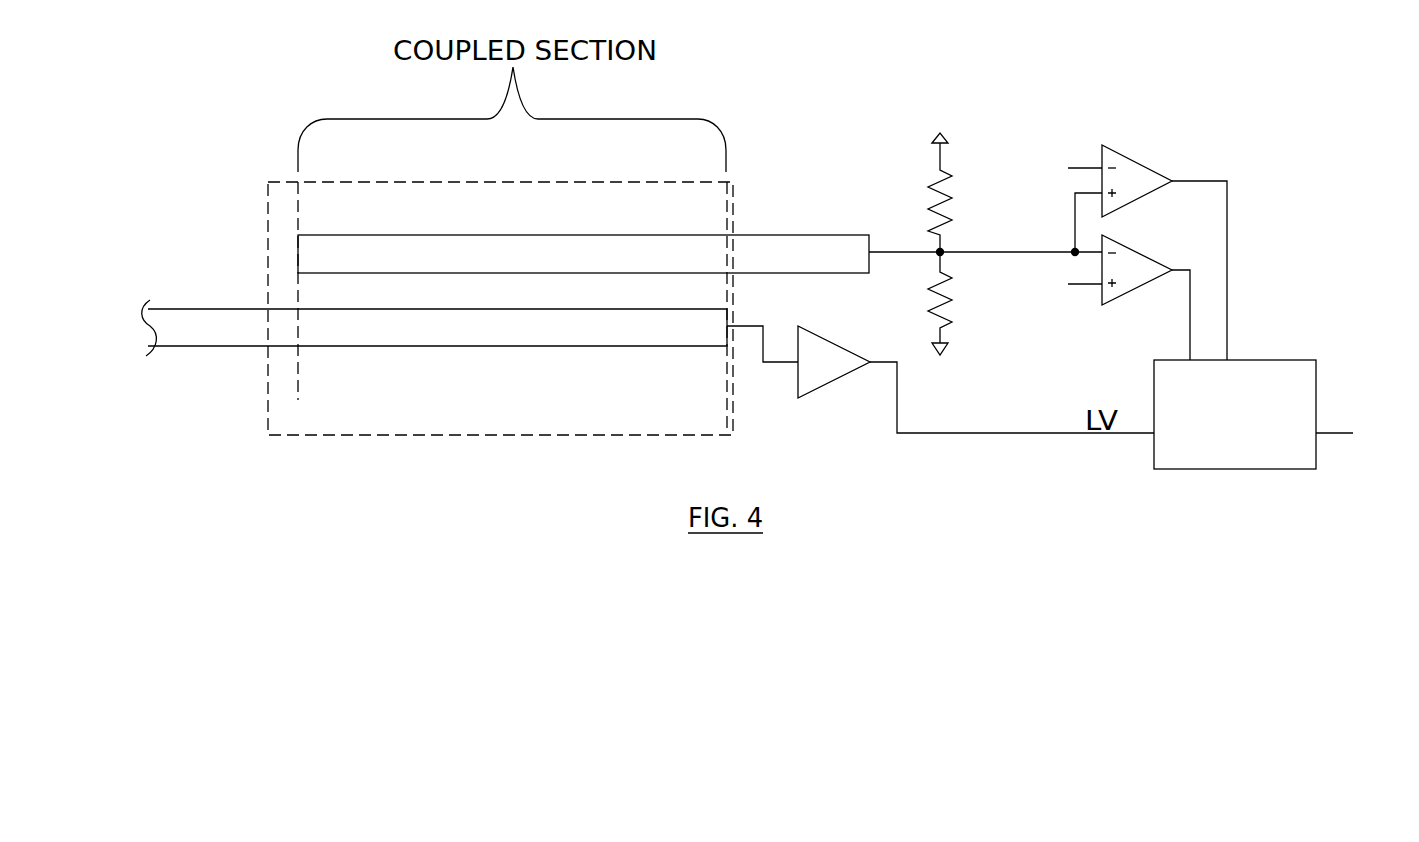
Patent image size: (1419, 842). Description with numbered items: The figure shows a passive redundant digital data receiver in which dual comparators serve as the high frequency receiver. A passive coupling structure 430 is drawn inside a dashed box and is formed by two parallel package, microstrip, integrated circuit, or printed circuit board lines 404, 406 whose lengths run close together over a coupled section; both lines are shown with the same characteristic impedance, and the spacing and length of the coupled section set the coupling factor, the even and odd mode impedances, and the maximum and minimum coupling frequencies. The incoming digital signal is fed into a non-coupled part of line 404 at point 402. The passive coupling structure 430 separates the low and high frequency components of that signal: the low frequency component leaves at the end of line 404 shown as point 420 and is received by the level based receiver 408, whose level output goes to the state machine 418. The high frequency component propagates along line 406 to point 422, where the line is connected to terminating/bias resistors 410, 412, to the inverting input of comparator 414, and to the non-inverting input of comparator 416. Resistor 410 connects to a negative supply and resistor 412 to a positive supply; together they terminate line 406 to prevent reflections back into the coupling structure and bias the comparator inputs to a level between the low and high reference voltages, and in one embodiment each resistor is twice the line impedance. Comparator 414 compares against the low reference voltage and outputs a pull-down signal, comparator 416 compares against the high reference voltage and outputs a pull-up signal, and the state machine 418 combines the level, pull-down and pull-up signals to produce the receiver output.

The input point 402 is at (143, 328).
The line 404 is at (397, 348).
The line 406 is at (405, 235).
The level based receiver 408 is at (798, 390).
The terminating/bias resistor 410 is at (952, 320).
The terminating/bias resistor 412 is at (930, 188).
The comparator 414 is at (1112, 303).
The comparator 416 is at (1110, 146).
The state machine 418 is at (1227, 360).
The output point 420 is at (727, 317).
The output point 422 is at (870, 235).
The passive coupling structure 430 is at (268, 182).